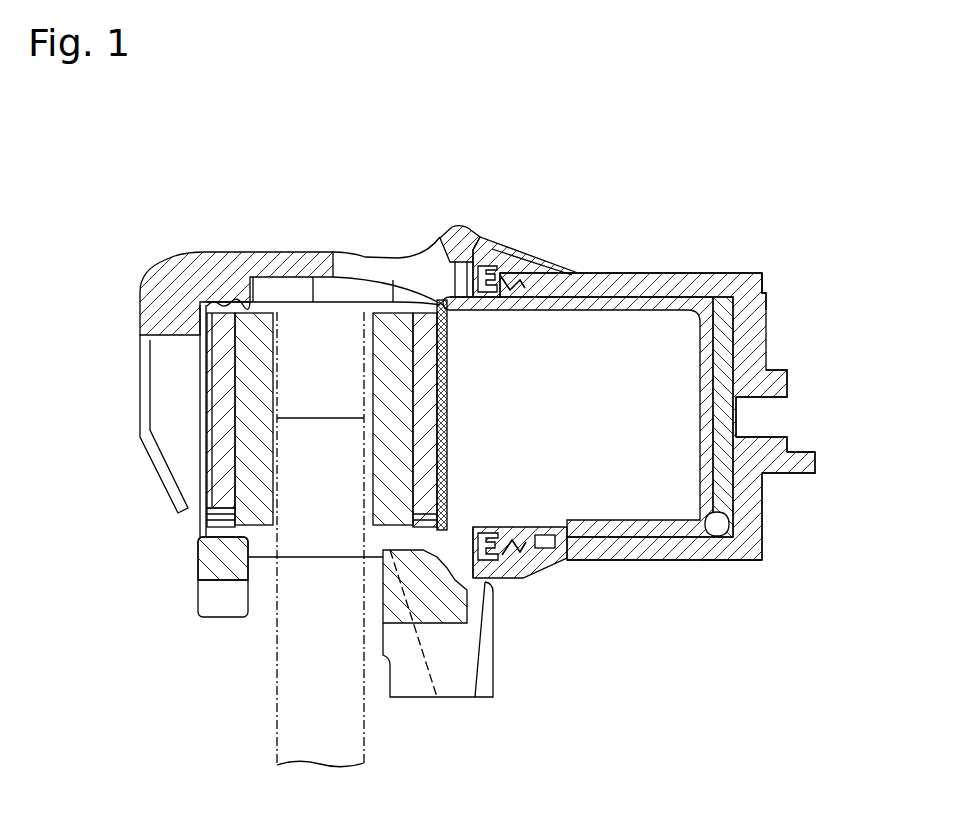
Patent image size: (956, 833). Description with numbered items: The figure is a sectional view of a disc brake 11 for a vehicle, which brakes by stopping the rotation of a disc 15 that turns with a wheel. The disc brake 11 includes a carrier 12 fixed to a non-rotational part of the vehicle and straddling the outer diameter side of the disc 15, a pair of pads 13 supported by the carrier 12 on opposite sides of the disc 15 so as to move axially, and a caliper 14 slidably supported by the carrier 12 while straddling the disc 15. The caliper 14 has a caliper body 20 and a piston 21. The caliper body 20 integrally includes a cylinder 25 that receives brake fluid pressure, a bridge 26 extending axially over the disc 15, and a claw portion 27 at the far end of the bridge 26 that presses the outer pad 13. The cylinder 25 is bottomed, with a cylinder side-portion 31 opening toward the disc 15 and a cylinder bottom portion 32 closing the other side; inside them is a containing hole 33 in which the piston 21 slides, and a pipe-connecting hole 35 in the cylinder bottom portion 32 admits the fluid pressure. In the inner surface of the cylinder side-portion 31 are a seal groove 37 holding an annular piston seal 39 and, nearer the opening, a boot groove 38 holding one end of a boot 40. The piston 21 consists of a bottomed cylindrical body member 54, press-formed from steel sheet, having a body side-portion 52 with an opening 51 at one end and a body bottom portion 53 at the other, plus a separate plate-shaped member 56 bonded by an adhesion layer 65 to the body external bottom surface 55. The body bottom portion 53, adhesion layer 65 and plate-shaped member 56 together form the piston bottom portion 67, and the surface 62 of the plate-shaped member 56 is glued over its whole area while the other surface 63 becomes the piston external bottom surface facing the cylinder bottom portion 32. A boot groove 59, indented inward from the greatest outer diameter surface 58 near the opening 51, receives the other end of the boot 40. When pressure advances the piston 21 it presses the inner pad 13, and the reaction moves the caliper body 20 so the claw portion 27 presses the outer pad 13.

The disc brake 11 is at (790, 220).
The carrier 12 is at (512, 663).
The pads 13 is at (216, 556).
The caliper 14 is at (654, 248).
The disc 15 is at (273, 688).
The caliper body 20 is at (599, 246).
The piston 21 is at (629, 553).
The cylinder 25 is at (694, 280).
The bridge 26 is at (293, 262).
The claw portion 27 is at (160, 398).
The cylinder side-portion 31 is at (650, 553).
The cylinder bottom portion 32 is at (760, 506).
The containing hole 33 is at (622, 298).
The pipe-connecting hole 35 is at (750, 400).
The seal groove 37 is at (565, 535).
The boot groove 38 is at (525, 545).
The piston seal 39 is at (526, 278).
The boot 40 is at (473, 237).
The opening 51 is at (447, 357).
The body side-portion 52 is at (565, 288).
The body bottom portion 53 is at (712, 336).
The body member 54 is at (686, 556).
The body external bottom surface 55 is at (766, 295).
The plate-shaped member 56 is at (775, 380).
The greatest outer diameter surface 58 is at (594, 560).
The boot groove 59 is at (466, 560).
The one side surface 62 is at (709, 540).
The piston external bottom surface 63 is at (743, 508).
The adhesion layer 65 is at (717, 490).
The piston bottom portion 67 is at (740, 418).